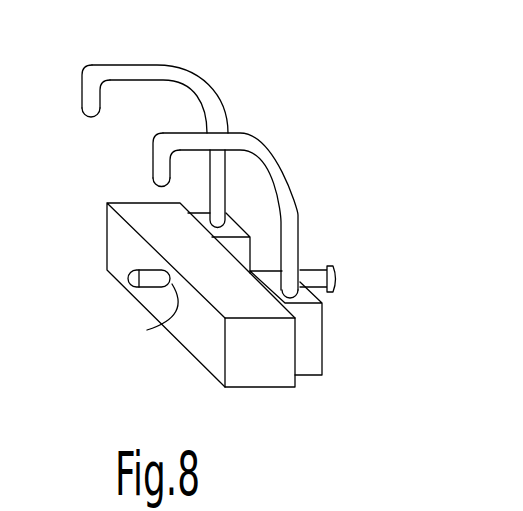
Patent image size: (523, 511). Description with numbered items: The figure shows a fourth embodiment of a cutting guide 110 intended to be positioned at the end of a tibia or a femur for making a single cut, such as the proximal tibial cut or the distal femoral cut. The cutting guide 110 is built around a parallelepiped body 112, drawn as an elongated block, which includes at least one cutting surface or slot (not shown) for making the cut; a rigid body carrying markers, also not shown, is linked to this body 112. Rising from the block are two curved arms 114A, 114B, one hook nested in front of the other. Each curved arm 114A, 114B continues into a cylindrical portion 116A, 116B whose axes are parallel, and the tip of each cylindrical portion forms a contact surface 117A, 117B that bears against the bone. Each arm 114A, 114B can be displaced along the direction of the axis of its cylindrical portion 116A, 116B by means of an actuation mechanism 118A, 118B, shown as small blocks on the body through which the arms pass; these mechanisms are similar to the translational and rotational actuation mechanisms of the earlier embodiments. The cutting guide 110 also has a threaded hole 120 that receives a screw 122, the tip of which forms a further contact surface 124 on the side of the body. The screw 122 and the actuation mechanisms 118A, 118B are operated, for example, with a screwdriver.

The cutting guide 110 is at (201, 319).
The parallelepiped body 112 is at (265, 378).
The curved arm 114A is at (201, 207).
The curved arm 114B is at (146, 130).
The cylindrical portion 116A is at (152, 157).
The cylindrical portion 116B is at (96, 97).
The contact surface 117A is at (163, 183).
The contact surface 117B is at (93, 114).
The actuation mechanism 118A is at (320, 344).
The actuation mechanism 118B is at (233, 222).
The threaded hole 120 is at (144, 319).
The screw 122 is at (308, 274).
The contact surface 124 is at (120, 284).